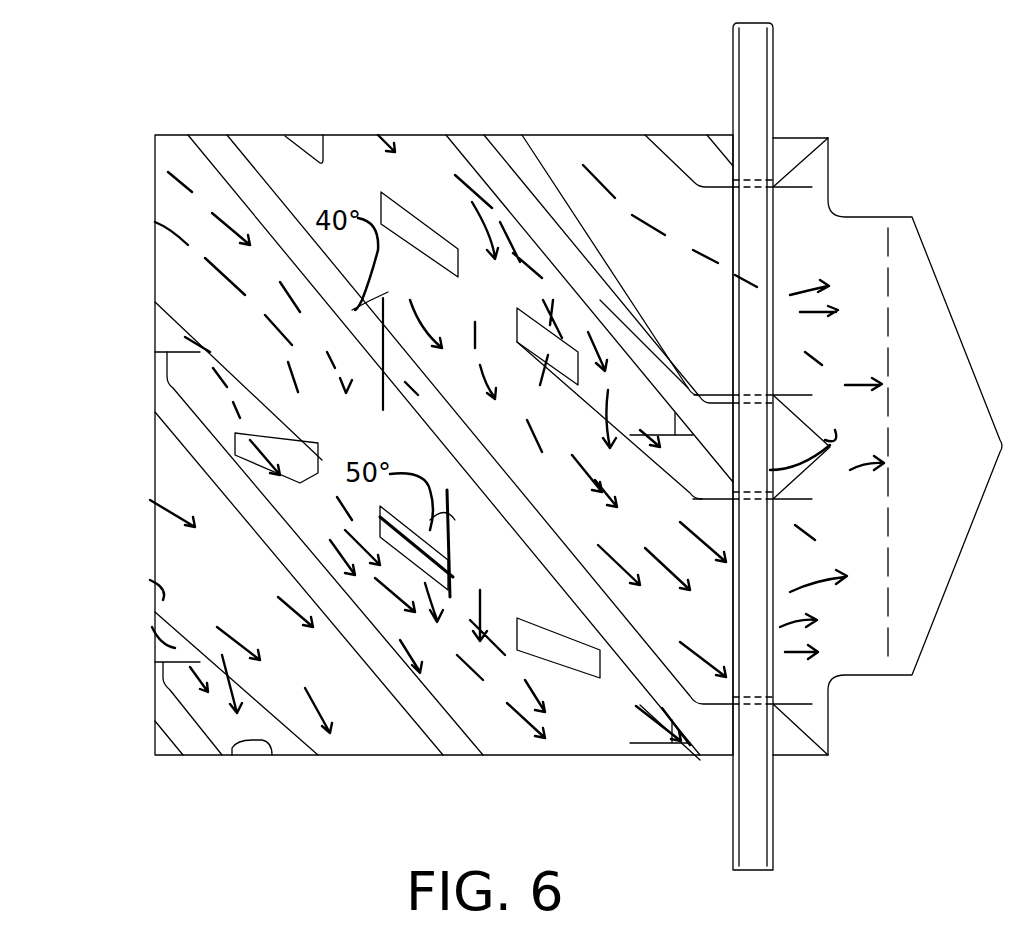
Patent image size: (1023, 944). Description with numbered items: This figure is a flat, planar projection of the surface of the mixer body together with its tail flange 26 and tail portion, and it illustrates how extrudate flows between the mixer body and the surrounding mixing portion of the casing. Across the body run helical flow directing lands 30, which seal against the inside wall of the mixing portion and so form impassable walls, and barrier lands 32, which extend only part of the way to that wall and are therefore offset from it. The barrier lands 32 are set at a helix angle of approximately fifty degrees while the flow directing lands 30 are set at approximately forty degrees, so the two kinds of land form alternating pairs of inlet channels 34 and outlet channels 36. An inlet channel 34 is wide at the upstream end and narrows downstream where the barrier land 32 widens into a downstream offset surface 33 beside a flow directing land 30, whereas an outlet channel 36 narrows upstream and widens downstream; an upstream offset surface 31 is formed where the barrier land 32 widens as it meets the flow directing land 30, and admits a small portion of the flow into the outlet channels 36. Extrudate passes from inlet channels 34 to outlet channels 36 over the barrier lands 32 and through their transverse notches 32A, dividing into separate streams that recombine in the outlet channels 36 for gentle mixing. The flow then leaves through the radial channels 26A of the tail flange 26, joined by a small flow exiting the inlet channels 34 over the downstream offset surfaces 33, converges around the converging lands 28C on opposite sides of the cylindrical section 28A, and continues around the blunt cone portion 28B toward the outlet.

The tail flange 26 is at (748, 870).
The radial channels 26A is at (773, 306).
The cylindrical section 28A is at (827, 469).
The blunt cone portion 28B is at (915, 446).
The converging lands 28C is at (785, 150).
The flow directing lands 30 is at (440, 250).
The upstream offset surface 31 is at (217, 402).
The barrier lands 32 is at (408, 248).
The transverse notches 32A is at (355, 192).
The downstream offset surface 33 is at (617, 392).
The inlet channels 34 is at (296, 434).
The outlet channels 36 is at (578, 455).